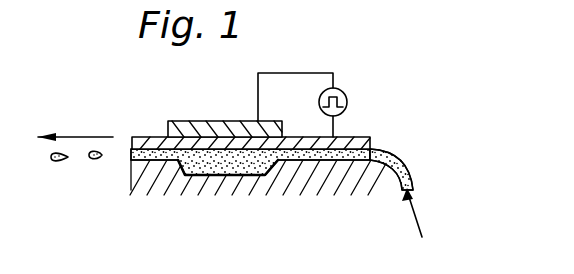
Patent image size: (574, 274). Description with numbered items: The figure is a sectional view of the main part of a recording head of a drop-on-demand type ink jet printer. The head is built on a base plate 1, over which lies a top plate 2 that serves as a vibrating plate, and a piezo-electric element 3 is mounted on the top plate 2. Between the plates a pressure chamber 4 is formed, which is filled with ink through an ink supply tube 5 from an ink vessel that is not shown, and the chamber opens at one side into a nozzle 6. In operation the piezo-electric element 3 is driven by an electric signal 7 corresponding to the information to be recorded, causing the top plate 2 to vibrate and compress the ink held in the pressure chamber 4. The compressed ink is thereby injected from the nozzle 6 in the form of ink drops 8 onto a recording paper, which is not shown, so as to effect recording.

The base plate 1 is at (283, 151).
The top plate (vibrating plate) 2 is at (146, 135).
The piezo-electric element 3 is at (222, 120).
The pressure chamber 4 is at (240, 176).
The ink supply tube 5 is at (406, 148).
The nozzle 6 is at (147, 168).
The electric signal 7 is at (345, 90).
The ink drops 8 is at (57, 166).